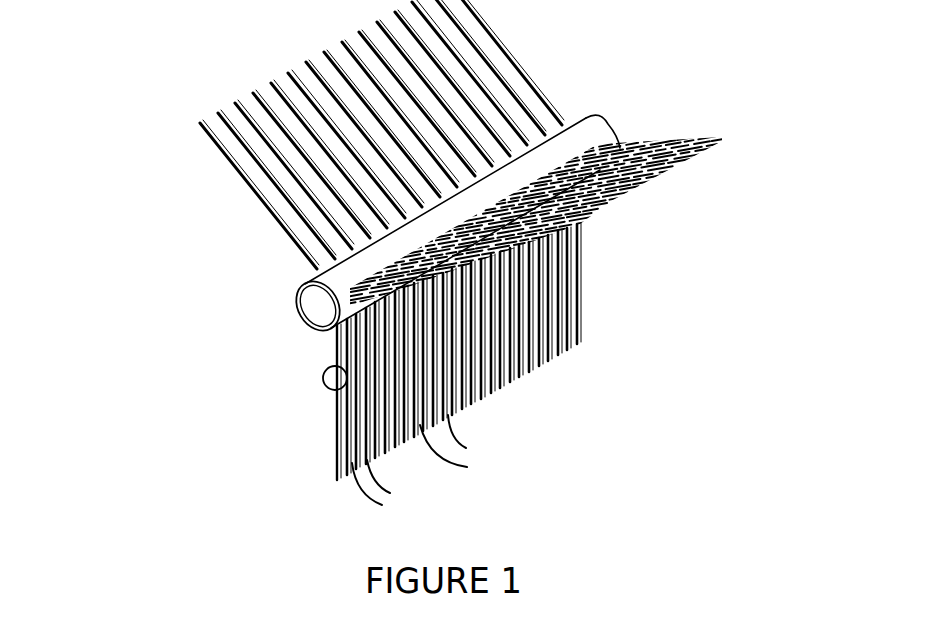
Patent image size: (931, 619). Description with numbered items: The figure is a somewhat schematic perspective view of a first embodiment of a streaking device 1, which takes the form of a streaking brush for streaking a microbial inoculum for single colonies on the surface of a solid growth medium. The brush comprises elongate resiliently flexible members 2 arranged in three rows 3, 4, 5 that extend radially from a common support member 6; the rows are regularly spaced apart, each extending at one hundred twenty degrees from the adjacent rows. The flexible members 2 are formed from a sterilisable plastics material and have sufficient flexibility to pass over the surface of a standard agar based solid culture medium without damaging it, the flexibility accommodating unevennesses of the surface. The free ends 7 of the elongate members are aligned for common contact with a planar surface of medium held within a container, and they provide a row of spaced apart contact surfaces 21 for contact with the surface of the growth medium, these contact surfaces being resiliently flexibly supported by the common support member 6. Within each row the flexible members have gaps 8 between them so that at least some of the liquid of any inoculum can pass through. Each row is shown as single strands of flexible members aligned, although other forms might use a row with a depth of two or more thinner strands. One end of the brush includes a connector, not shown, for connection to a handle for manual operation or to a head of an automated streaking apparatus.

The streaking device 1 is at (432, 272).
The elongate resiliently flexible members 2 is at (325, 387).
The first row of flexible members 3 is at (263, 200).
The second row of flexible members 4 is at (658, 138).
The third row of flexible members 5 is at (587, 302).
The common support member 6 is at (303, 312).
The free ends 7 is at (319, 487).
The gaps 8 is at (380, 491).
The contact surfaces 21 is at (464, 445).